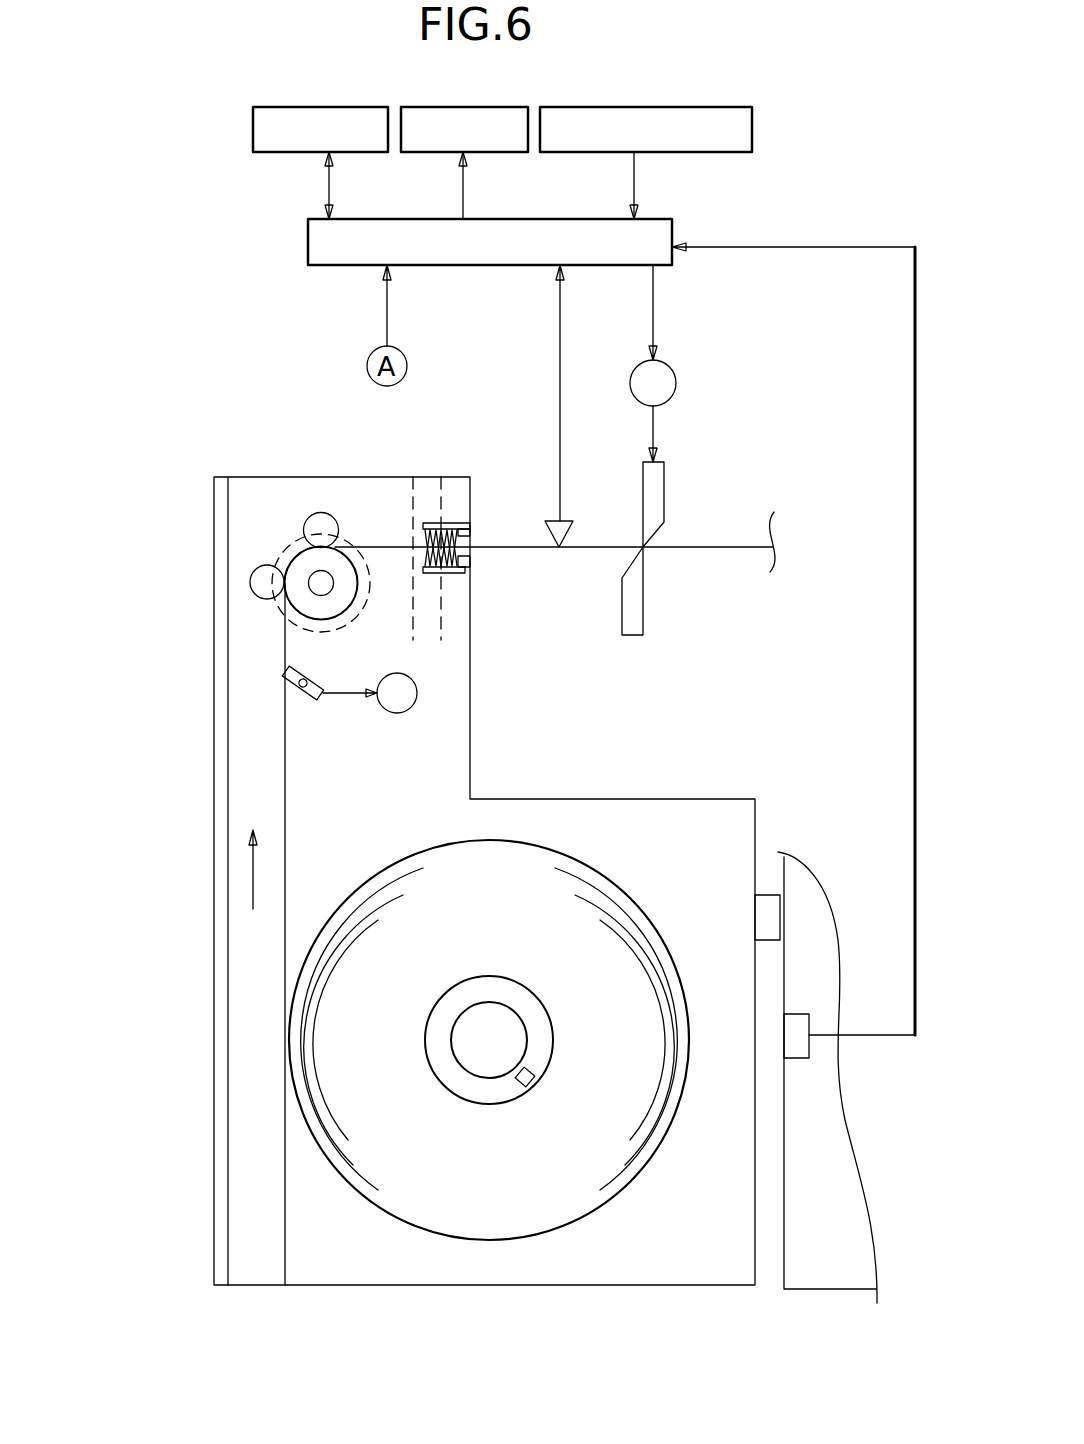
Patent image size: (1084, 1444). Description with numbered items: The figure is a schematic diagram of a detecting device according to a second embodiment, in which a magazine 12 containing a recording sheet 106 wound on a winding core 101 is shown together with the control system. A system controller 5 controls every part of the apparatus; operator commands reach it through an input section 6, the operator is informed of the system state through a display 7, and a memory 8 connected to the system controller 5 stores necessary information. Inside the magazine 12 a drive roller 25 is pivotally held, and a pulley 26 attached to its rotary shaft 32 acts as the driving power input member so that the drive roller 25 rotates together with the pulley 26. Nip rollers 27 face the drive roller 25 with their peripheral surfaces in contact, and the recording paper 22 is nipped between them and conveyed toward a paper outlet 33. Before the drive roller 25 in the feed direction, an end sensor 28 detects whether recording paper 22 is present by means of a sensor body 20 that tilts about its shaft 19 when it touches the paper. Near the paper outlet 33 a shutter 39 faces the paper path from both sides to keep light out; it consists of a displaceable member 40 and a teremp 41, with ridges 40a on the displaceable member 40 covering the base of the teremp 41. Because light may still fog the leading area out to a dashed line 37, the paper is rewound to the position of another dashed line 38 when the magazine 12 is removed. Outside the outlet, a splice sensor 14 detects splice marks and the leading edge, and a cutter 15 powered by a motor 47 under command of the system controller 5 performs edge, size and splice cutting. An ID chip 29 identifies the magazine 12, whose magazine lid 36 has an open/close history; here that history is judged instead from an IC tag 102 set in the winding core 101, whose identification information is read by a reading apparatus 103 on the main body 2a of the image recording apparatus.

The main body 2a is at (826, 1291).
The system controller 5 is at (657, 220).
The input section 6 is at (585, 107).
The display 7 is at (470, 107).
The memory 8 is at (358, 107).
The magazine 12 is at (185, 1240).
The splice sensor 14 is at (573, 533).
The cutter 15 is at (643, 608).
The shaft 19 is at (303, 681).
The sensor body 20 is at (300, 700).
The recording paper 22 is at (287, 816).
The drive roller 25 is at (255, 591).
The pulley 26 is at (300, 628).
The nip rollers 27 is at (250, 575).
The end sensor 28 is at (283, 692).
The ID chip 29 is at (762, 895).
The rotary shaft 32 is at (333, 586).
The paper outlet 33 is at (477, 542).
The magazine lid 36 is at (218, 1001).
The dashed line 37 is at (445, 495).
The dashed line 38 is at (415, 497).
The shutter 39 is at (496, 554).
The displaceable member 40 is at (450, 573).
The ridges 40a is at (463, 573).
The teremp 41 is at (467, 552).
The motor 47 is at (676, 385).
The winding core 101 is at (550, 1038).
The IC tag 102 is at (530, 1085).
The reading apparatus 103 is at (798, 1060).
The recording sheet 106 is at (650, 1160).